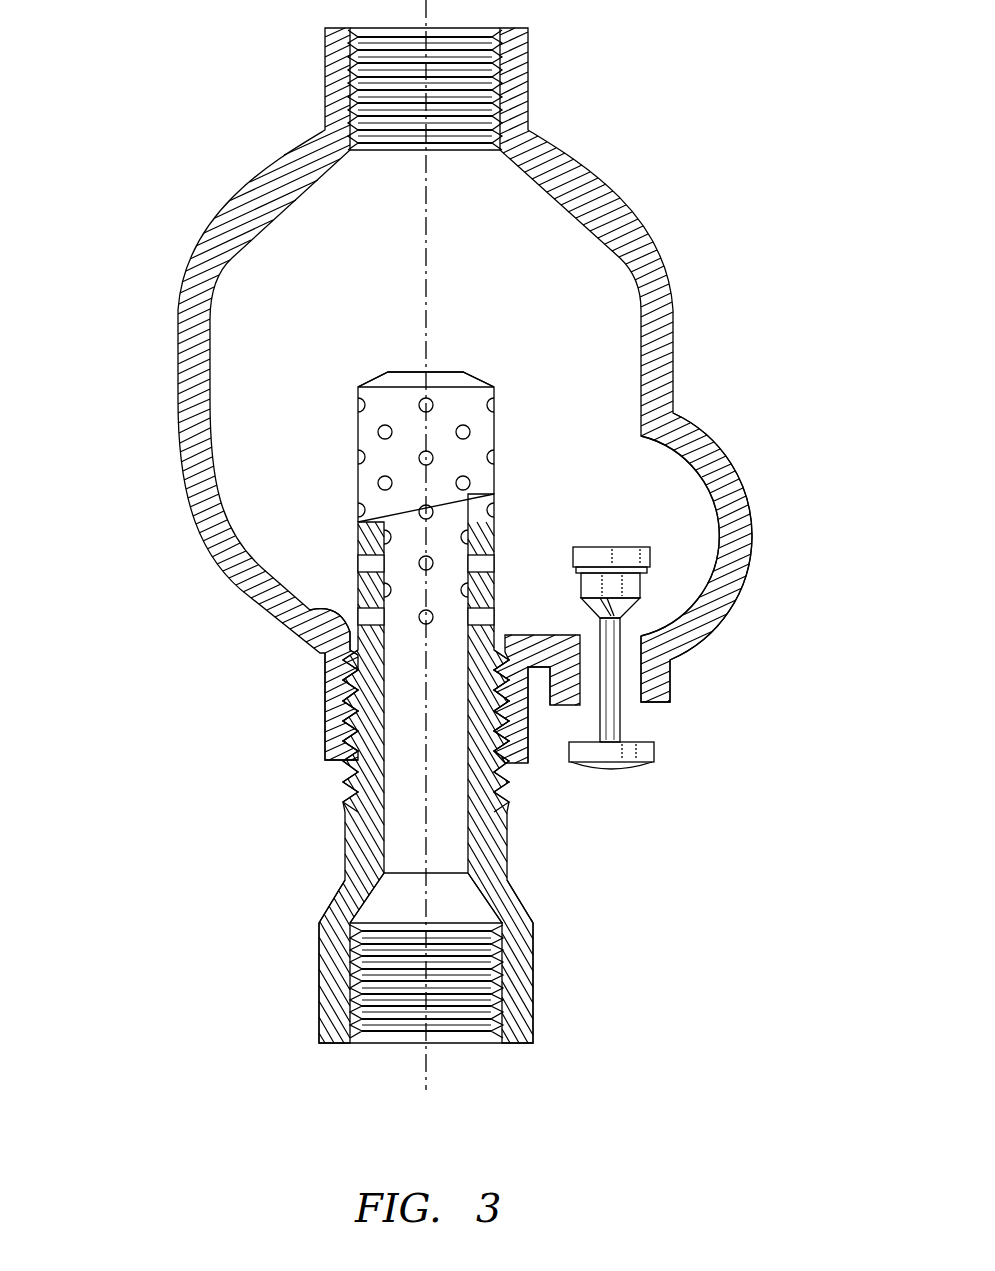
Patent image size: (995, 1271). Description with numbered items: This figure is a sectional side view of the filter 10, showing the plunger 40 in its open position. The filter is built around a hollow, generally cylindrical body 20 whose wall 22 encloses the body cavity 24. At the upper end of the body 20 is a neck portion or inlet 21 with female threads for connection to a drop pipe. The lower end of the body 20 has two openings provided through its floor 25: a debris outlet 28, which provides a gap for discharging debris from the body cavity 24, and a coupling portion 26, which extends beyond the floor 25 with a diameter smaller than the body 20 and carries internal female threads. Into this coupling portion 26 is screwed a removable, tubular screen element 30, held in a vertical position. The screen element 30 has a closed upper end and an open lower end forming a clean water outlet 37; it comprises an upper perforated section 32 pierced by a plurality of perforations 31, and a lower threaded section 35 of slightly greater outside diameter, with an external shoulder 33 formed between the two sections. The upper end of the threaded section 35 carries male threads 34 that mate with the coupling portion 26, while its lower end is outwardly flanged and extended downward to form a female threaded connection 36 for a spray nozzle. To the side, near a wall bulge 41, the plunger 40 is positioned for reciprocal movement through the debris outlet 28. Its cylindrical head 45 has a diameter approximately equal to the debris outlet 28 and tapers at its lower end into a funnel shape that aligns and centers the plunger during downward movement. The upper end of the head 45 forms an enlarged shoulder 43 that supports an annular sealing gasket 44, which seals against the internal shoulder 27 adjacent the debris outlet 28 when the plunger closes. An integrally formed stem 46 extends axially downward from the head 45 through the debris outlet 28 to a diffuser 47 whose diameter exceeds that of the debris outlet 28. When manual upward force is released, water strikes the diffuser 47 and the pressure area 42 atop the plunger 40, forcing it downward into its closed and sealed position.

The gas vent assembly 10 is at (706, 84).
The body 20 is at (137, 357).
The neck portion or inlet 21 is at (528, 70).
The housing wall 22 is at (573, 167).
The body cavity 24 is at (477, 222).
The floor 25 is at (540, 657).
The coupling portion 26 is at (326, 728).
The internal shoulder 27 is at (546, 636).
The debris outlet 28 is at (630, 705).
The screen element 30 is at (458, 357).
The perforations 31 is at (468, 430).
The upper perforated section 32 is at (496, 393).
The external shoulder 33 is at (316, 616).
The male threads 34 is at (350, 787).
The lower threaded section 35 is at (340, 915).
The female threaded connection 36 is at (322, 1000).
The clean water outlet 37 is at (493, 1020).
The plunger 40 is at (687, 665).
The valve housing bulge 41 is at (700, 432).
The pressure area 42 is at (585, 548).
The shoulder 43 is at (620, 556).
The annular sealing gasket 44 is at (650, 558).
The head 45 is at (641, 590).
The stem 46 is at (621, 735).
The diffuser 47 is at (606, 768).